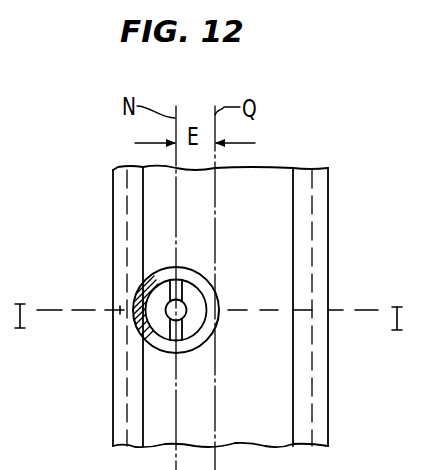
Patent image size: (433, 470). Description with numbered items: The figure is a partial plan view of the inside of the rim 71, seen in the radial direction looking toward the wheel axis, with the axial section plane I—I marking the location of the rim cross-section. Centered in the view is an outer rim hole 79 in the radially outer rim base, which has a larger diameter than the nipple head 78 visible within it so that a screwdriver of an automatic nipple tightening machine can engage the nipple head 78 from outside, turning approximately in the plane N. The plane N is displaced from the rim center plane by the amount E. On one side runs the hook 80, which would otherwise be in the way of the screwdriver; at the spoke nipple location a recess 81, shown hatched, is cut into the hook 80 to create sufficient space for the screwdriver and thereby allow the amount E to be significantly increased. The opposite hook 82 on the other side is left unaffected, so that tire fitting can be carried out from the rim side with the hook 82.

The rim 71 is at (90, 170).
The nipple head 78 is at (196, 317).
The outer rim hole 79 is at (208, 292).
The hook 80 is at (142, 402).
The recess 81 is at (133, 303).
The opposite hook 82 is at (293, 410).